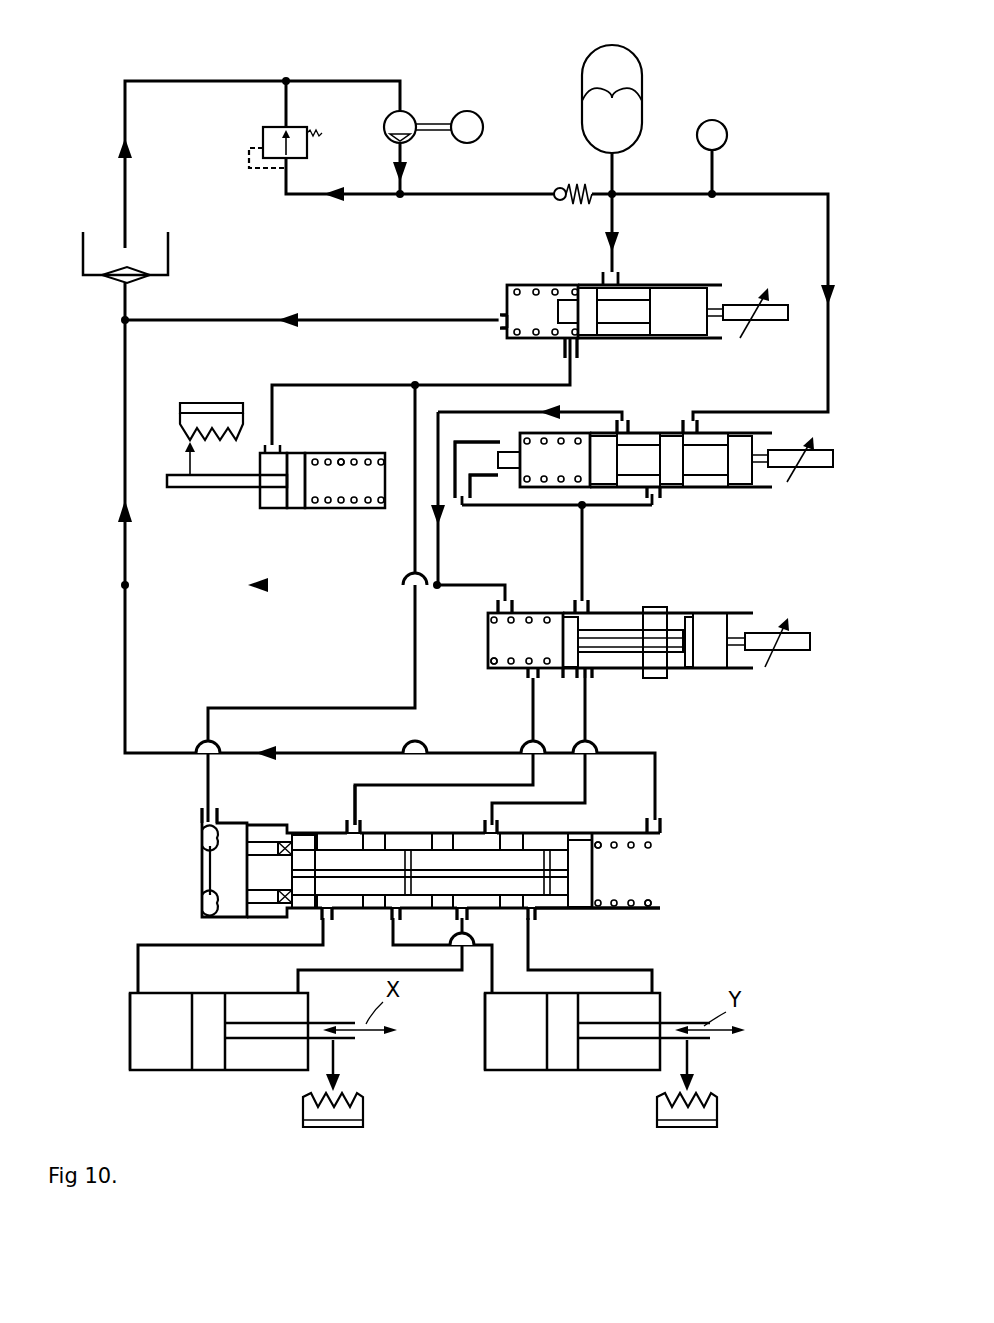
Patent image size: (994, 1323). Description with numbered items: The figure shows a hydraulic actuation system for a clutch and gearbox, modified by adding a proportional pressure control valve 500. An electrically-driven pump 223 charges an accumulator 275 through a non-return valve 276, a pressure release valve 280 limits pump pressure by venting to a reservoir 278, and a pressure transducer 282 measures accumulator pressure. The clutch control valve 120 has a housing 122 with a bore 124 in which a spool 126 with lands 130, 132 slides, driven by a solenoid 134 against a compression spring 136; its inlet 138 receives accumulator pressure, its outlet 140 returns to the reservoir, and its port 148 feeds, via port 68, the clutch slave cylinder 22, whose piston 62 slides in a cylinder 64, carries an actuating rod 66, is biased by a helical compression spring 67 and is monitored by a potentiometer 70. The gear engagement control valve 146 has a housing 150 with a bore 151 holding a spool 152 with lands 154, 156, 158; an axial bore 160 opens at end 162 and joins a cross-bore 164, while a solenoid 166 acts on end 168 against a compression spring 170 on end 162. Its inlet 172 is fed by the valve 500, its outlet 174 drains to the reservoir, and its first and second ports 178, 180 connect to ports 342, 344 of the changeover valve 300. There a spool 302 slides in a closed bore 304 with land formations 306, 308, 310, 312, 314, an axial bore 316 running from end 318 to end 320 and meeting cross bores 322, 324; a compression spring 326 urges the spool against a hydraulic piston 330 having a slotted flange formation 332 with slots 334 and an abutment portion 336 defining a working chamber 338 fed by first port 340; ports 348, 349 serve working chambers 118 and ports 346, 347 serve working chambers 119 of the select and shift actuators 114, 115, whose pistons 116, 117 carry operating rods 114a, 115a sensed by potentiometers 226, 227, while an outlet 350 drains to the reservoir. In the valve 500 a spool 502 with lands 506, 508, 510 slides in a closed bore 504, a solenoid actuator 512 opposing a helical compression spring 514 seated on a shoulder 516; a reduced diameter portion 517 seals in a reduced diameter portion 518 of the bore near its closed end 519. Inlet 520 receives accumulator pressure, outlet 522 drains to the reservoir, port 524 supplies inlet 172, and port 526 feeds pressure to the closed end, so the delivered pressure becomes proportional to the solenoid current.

The clutch slave cylinder 22 is at (261, 475).
The piston 62 is at (296, 505).
The cylinder 64 is at (362, 488).
The actuating rod 66 is at (180, 484).
The helical compression spring 67 is at (345, 460).
The port 68 is at (280, 447).
The potentiometer 70 is at (185, 405).
The select actuator 114 is at (194, 1057).
The operating rod 114a is at (280, 1042).
The shift actuator 115 is at (556, 1057).
The operating rod 115a is at (622, 1042).
The piston 116 is at (205, 1069).
The piston 117 is at (560, 1069).
The working chamber 118 is at (230, 1070).
The working chamber 119 is at (136, 1066).
The clutch control valve 120 is at (621, 296).
The housing 122 is at (630, 340).
The bore 124 is at (618, 285).
The spool 126 is at (712, 292).
The land 130 is at (665, 282).
The land 132 is at (565, 285).
The solenoid 134 is at (755, 322).
The compression spring 136 is at (515, 340).
The inlet 138 is at (600, 282).
The outlet 140 is at (500, 318).
The gear engagement control valve 146 is at (724, 698).
The port 148 is at (580, 345).
The housing 150 is at (630, 642).
The bore 151 is at (492, 654).
The spool 152 is at (760, 625).
The land 154 is at (708, 660).
The land 156 is at (650, 618).
The land 158 is at (570, 678).
The axial bore 160 is at (540, 633).
The end 162 is at (540, 650).
The cross-bore 164 is at (672, 618).
The solenoid 166 is at (780, 652).
The end 168 is at (730, 665).
The compression spring 170 is at (500, 665).
The inlet 172 is at (578, 603).
The outlet 174 is at (508, 600).
The first port 178 is at (528, 678).
The second port 180 is at (595, 680).
The pump 223 is at (405, 118).
The potentiometer 226 is at (345, 1123).
The potentiometer 227 is at (665, 1123).
The accumulator 275 is at (630, 65).
The non-return valve 276 is at (572, 205).
The reservoir 278 is at (150, 238).
The pressure release valve 280 is at (270, 140).
The pressure transducer 282 is at (715, 125).
The changeover valve 300 is at (410, 885).
The spool 302 is at (600, 888).
The closed bore 304 is at (670, 857).
The land formation 306 is at (605, 912).
The land formation 308 is at (500, 850).
The land formation 310 is at (410, 860).
The land formation 312 is at (352, 812).
The land formation 314 is at (305, 833).
The axial bore 316 is at (600, 870).
The end 318 is at (604, 850).
The end 320 is at (292, 870).
The cross bore 322 is at (552, 855).
The cross bore 324 is at (382, 840).
The compression spring 326 is at (640, 905).
The hydraulic piston 330 is at (205, 905).
The flange formation 332 is at (258, 865).
The slots 334 is at (282, 840).
The abutment portion 336 is at (205, 882).
The working chamber 338 is at (205, 835).
The first port 340 is at (200, 812).
The port 342 is at (350, 828).
The port 344 is at (485, 827).
The port 346 is at (330, 925).
The port 347 is at (396, 925).
The port 348 is at (470, 922).
The port 349 is at (535, 922).
The outlet 350 is at (665, 820).
The proportional pressure control valve 500 is at (645, 476).
The spool 502 is at (775, 442).
The closed bore 504 is at (705, 490).
The land 506 is at (750, 488).
The land 508 is at (665, 488).
The land 510 is at (612, 488).
The solenoid actuator 512 is at (800, 470).
The helical compression spring 514 is at (590, 490).
The shoulder 516 is at (535, 484).
The reduced diameter portion 517 is at (570, 440).
The reduced diameter portion 518 is at (520, 448).
The closed end 519 is at (480, 478).
The inlet 520 is at (697, 420).
The outlet 522 is at (630, 422).
The port 524 is at (650, 500).
The port 526 is at (458, 480).